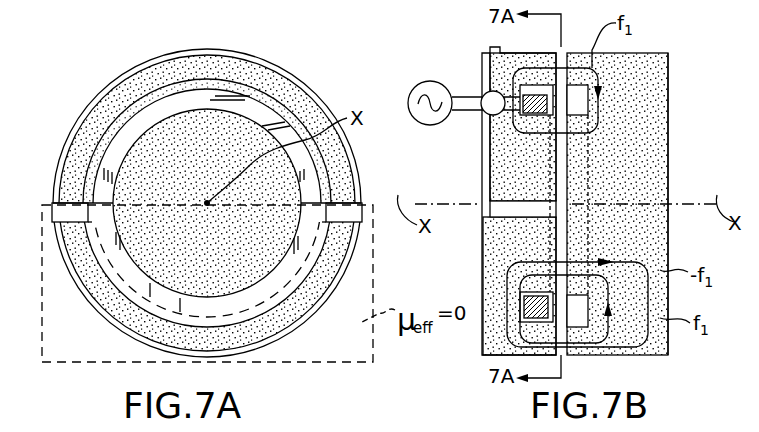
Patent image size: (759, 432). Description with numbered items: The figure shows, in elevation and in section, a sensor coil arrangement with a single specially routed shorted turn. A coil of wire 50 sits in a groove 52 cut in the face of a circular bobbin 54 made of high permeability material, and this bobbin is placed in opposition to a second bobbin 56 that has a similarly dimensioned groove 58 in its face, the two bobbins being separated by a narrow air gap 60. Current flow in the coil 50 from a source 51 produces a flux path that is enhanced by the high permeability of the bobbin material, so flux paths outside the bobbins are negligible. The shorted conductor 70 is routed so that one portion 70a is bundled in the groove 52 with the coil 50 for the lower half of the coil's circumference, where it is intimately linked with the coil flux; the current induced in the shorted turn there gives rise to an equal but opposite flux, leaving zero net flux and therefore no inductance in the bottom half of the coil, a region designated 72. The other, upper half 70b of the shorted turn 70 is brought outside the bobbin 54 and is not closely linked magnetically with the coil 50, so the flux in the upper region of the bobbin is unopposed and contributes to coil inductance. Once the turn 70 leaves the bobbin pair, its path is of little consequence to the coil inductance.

In FIG. 7A, the shorted turn conductor 70 is at (207, 187).
In FIG. 7B, the shorted turn conductor 70 is at (507, 204).
In FIG. 7A, the portion of shorted turn 70a is at (150, 297).
In FIG. 7B, the portion of shorted turn 70a is at (578, 350).
In FIG. 7A, the upper half of shorted turn 70b is at (163, 53).
In FIG. 7B, the upper half of shorted turn 70b is at (497, 163).
In FIG. 7A, the circular bobbin 54 is at (100, 116).
In FIG. 7B, the circular bobbin 54 is at (498, 188).
In FIG. 7A, the coil of wire 50 is at (118, 155).
In FIG. 7B, the coil of wire 50 is at (522, 112).
In FIG. 7A, the groove 52 is at (272, 98).
In FIG. 7B, the groove 52 is at (500, 350).
In FIG. 7A, the zero net flux area 72 is at (376, 255).
In FIG. 7B, the source 51 is at (412, 88).
In FIG. 7B, the air gap 60 is at (572, 181).
In FIG. 7B, the opposing bobbin 56 is at (670, 227).
In FIG. 7B, the groove of opposing bobbin 58 is at (592, 332).